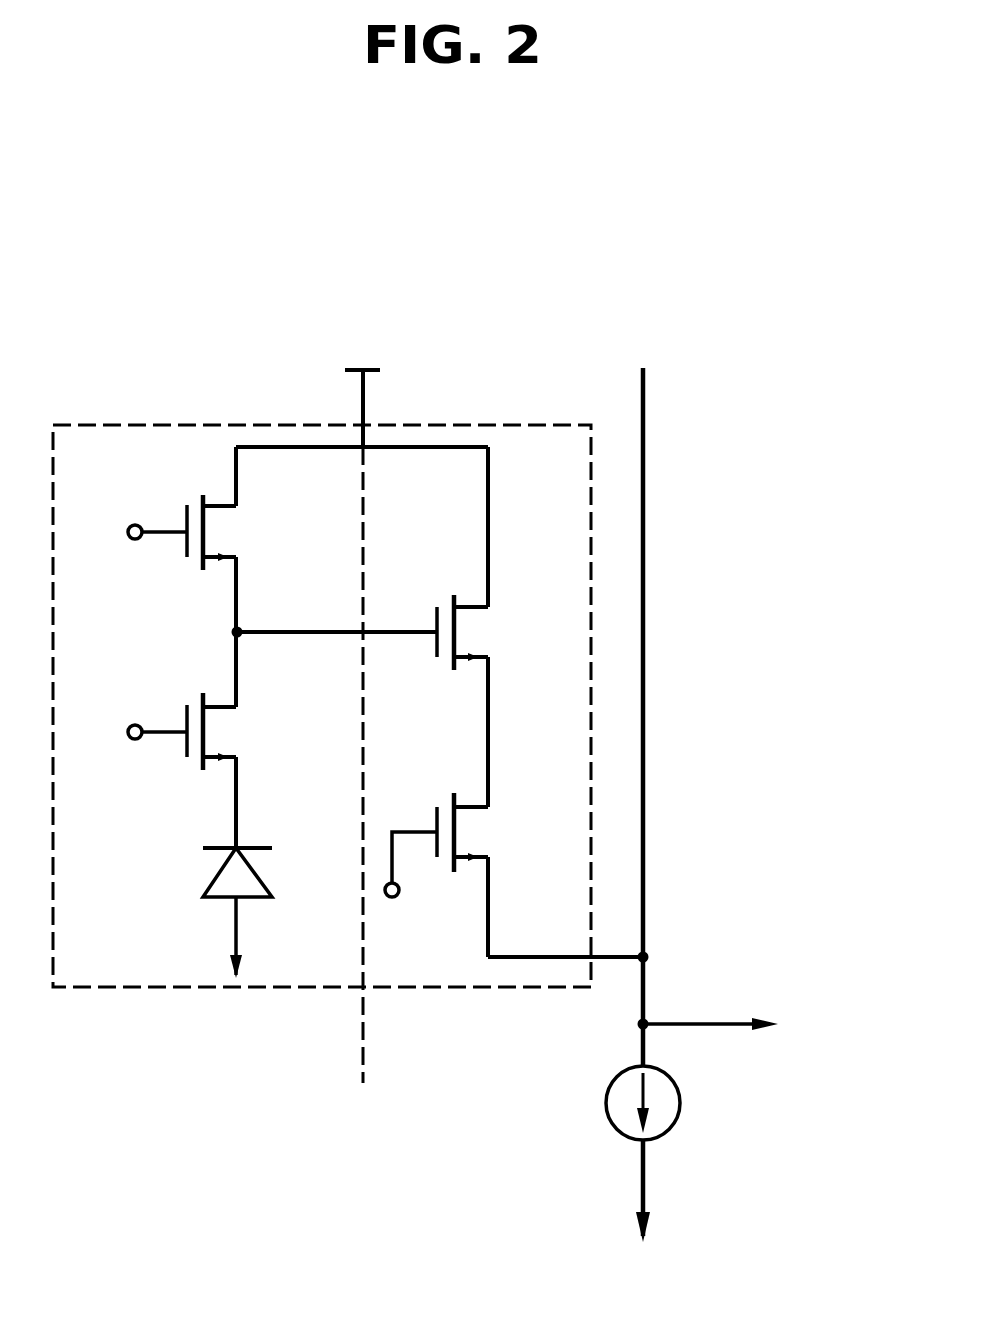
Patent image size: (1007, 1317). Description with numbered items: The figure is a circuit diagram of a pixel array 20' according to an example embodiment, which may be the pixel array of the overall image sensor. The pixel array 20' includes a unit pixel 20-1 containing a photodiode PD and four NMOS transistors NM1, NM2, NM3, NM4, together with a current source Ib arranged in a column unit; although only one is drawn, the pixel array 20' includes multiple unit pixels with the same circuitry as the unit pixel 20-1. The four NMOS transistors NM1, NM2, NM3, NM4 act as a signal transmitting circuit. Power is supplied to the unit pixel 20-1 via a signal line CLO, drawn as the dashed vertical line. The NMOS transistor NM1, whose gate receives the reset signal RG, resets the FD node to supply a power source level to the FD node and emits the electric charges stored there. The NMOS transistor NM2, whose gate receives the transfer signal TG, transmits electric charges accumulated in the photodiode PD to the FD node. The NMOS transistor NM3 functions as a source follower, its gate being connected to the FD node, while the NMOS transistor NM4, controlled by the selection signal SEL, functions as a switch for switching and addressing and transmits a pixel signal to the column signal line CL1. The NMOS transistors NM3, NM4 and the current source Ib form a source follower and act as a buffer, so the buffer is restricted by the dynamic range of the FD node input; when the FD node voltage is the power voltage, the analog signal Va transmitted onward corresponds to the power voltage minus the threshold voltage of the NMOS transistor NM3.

The pixel array 20' is at (348, 663).
The unit pixel 20-1 is at (433, 423).
The NMOS transistor NM1 is at (246, 532).
The NMOS transistor NM2 is at (246, 731).
The NMOS transistor NM3 is at (499, 558).
The NMOS transistor NM4 is at (540, 807).
The reset gate signal RG is at (126, 533).
The transfer gate signal TG is at (125, 733).
The FD node FD is at (305, 632).
The photodiode PD is at (207, 867).
The selection signal SEL is at (403, 890).
The signal line CLO is at (363, 1053).
The column signal line CL1 is at (643, 720).
The analog signal Va is at (737, 1027).
The current source Ib is at (667, 1103).